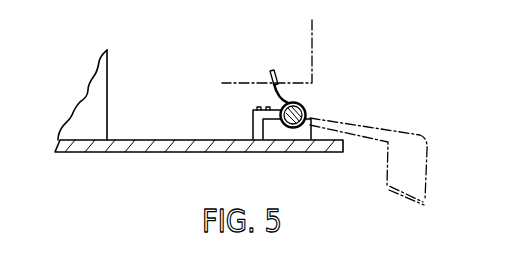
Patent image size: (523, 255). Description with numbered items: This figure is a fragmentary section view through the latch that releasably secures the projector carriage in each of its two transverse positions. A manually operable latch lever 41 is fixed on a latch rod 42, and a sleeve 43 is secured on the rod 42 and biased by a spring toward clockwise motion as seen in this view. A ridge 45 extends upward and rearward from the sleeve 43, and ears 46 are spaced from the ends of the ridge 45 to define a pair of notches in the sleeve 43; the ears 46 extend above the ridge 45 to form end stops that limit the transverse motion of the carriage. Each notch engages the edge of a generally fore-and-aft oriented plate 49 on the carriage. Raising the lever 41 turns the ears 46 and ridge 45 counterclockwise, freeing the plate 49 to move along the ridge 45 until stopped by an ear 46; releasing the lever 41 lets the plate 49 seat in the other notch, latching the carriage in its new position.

The latch lever 41 is at (428, 150).
The latch rod 42 is at (306, 110).
The sleeve 43 is at (305, 100).
The ridge 45 is at (268, 87).
The ears 46 is at (274, 70).
The plate 49 is at (313, 48).